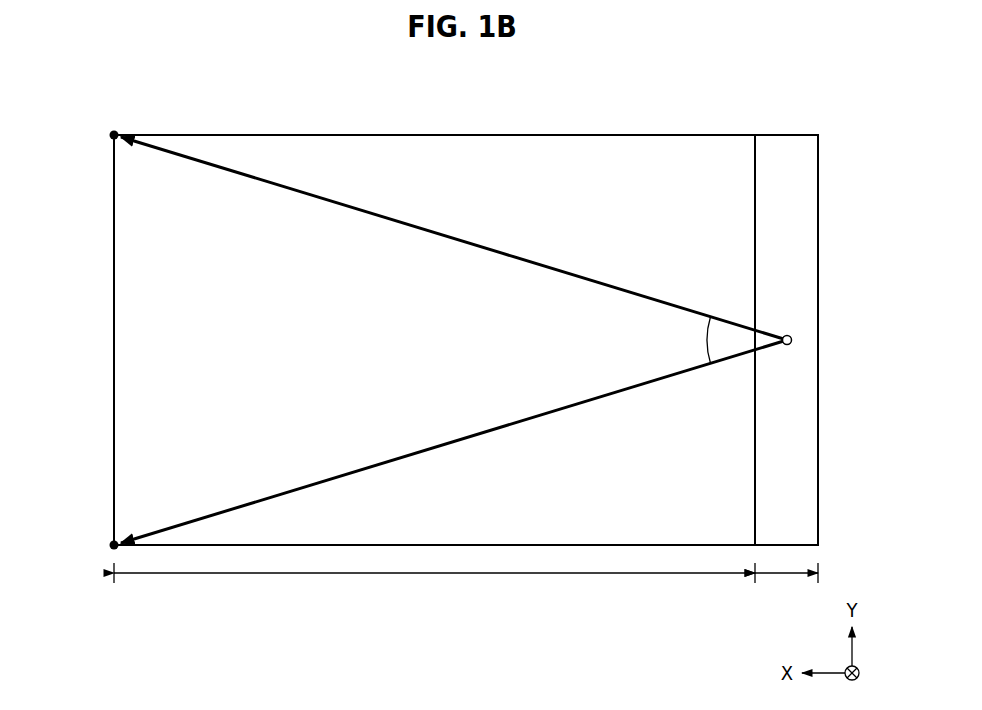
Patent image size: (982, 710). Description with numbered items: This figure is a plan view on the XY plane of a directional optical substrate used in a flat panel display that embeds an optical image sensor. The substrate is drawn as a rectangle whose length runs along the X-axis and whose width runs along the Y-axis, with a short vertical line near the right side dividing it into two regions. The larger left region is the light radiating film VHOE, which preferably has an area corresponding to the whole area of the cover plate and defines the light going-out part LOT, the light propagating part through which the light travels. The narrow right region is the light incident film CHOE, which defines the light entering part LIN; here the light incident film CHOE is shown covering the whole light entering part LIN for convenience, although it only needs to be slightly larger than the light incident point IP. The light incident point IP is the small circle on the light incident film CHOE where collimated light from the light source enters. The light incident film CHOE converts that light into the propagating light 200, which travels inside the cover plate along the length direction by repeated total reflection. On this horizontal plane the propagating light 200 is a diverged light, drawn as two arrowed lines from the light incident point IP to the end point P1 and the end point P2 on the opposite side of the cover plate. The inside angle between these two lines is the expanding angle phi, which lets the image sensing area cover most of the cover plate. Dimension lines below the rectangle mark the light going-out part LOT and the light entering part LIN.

The propagating light 200 is at (583, 275).
The end point P1 is at (114, 131).
The end point P2 is at (110, 548).
The light incident point IP is at (792, 340).
The light radiating film VHOE is at (632, 145).
The light incident film CHOE is at (785, 145).
The light going-out part LOT is at (434, 581).
The light entering part LIN is at (786, 581).
The expanding angle phi is at (698, 340).